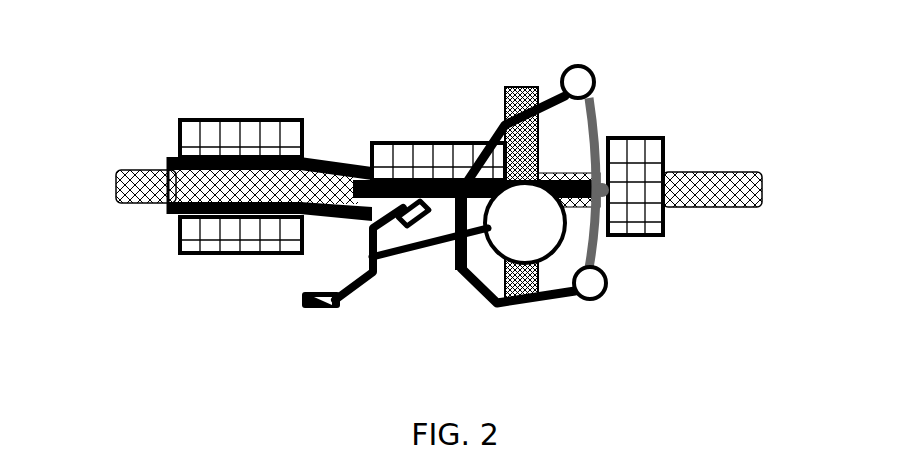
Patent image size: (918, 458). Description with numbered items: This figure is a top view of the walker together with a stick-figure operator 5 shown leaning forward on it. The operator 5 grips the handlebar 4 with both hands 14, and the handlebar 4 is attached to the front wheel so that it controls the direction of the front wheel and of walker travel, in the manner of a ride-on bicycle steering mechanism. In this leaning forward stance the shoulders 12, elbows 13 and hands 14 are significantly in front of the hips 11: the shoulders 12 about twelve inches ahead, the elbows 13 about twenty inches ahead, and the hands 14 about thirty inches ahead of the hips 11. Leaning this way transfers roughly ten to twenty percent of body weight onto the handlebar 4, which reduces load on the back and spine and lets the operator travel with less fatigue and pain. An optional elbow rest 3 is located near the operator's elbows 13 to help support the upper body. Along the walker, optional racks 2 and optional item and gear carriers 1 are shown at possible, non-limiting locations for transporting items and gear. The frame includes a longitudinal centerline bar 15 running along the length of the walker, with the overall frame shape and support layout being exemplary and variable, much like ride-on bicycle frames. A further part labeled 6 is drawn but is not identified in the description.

The item and gear carriers 1 is at (182, 130).
The racks 2 is at (182, 177).
The elbow rest 3 is at (503, 93).
The handlebar 4 is at (597, 115).
The operator 5 is at (422, 243).
The shaft 6 is at (118, 185).
The hips 11 is at (367, 248).
The shoulders 12 is at (460, 272).
The elbows 13 is at (488, 128).
The hands 14 is at (592, 287).
The longitudinal centerline bar 15 is at (433, 175).